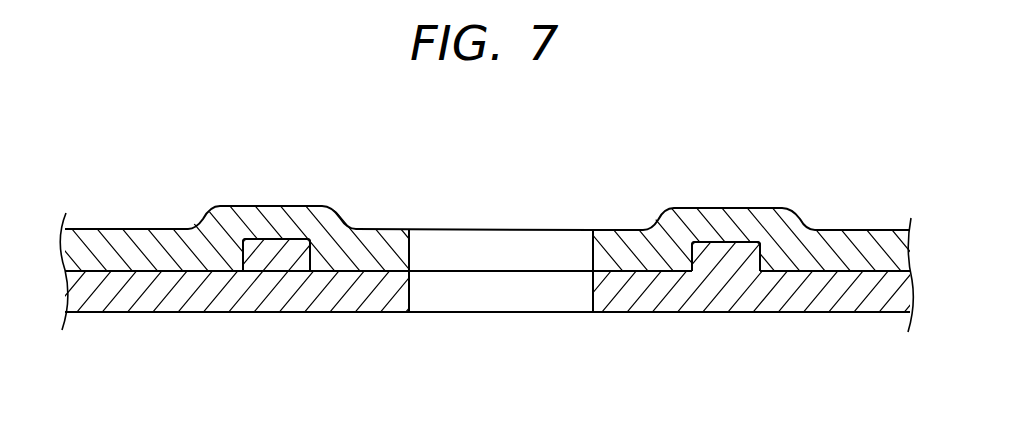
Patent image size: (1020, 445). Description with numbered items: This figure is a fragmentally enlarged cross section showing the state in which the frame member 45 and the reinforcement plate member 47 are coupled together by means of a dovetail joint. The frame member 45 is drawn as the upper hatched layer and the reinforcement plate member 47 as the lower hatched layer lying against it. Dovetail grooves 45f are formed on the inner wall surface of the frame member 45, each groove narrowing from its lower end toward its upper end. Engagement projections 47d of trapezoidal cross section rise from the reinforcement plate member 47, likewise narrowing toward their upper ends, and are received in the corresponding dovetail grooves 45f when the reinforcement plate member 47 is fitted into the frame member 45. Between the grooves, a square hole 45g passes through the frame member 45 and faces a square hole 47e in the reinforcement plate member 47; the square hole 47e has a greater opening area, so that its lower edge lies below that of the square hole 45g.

The frame member 45 is at (142, 228).
The dovetail groove 45f is at (308, 250).
The square hole 45g is at (538, 238).
The reinforcement plate member 47 is at (147, 297).
The engagement projection 47d is at (273, 245).
The square hole 47e is at (493, 297).